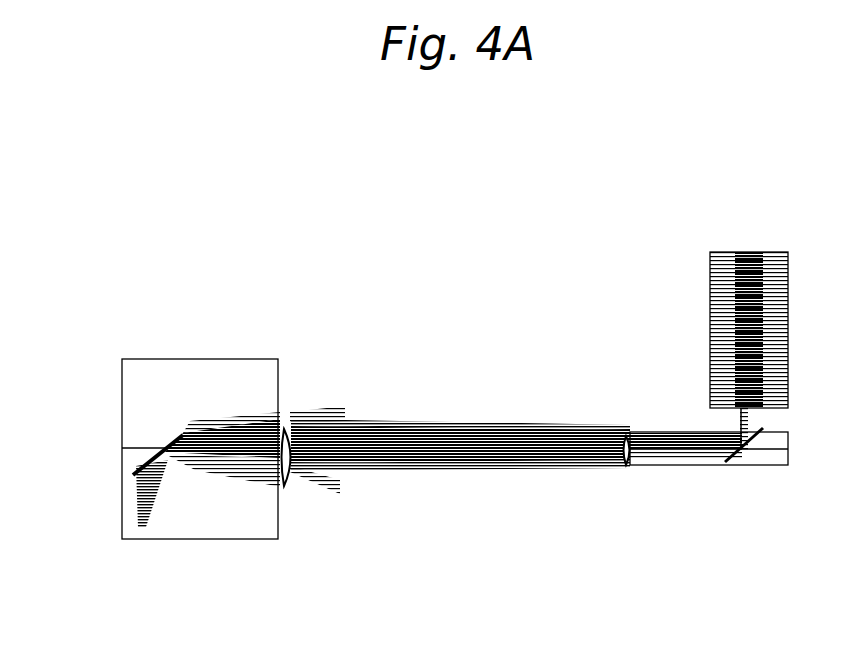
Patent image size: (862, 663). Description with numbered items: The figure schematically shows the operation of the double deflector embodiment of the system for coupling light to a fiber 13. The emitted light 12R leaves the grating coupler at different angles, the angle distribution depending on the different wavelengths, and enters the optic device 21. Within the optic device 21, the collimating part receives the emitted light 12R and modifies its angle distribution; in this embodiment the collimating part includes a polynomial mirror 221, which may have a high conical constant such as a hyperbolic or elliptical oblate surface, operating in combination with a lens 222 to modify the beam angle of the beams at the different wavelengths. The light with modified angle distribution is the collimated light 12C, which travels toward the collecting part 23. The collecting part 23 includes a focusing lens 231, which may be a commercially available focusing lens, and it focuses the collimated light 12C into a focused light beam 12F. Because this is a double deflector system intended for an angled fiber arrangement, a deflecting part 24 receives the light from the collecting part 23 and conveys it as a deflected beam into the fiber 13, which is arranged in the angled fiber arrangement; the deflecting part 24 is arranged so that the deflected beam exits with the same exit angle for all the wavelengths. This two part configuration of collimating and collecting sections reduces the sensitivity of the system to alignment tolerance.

The fiber 13 is at (767, 250).
The optic device 21 is at (215, 370).
The polynomial mirror 221 is at (159, 448).
The lens 222 is at (288, 430).
The collecting part 23 is at (635, 473).
The focusing lens 231 is at (625, 468).
The deflecting part 24 is at (737, 477).
The collimated light 12C is at (255, 439).
The focused light beam 12F is at (516, 426).
The emitted light 12R is at (175, 532).